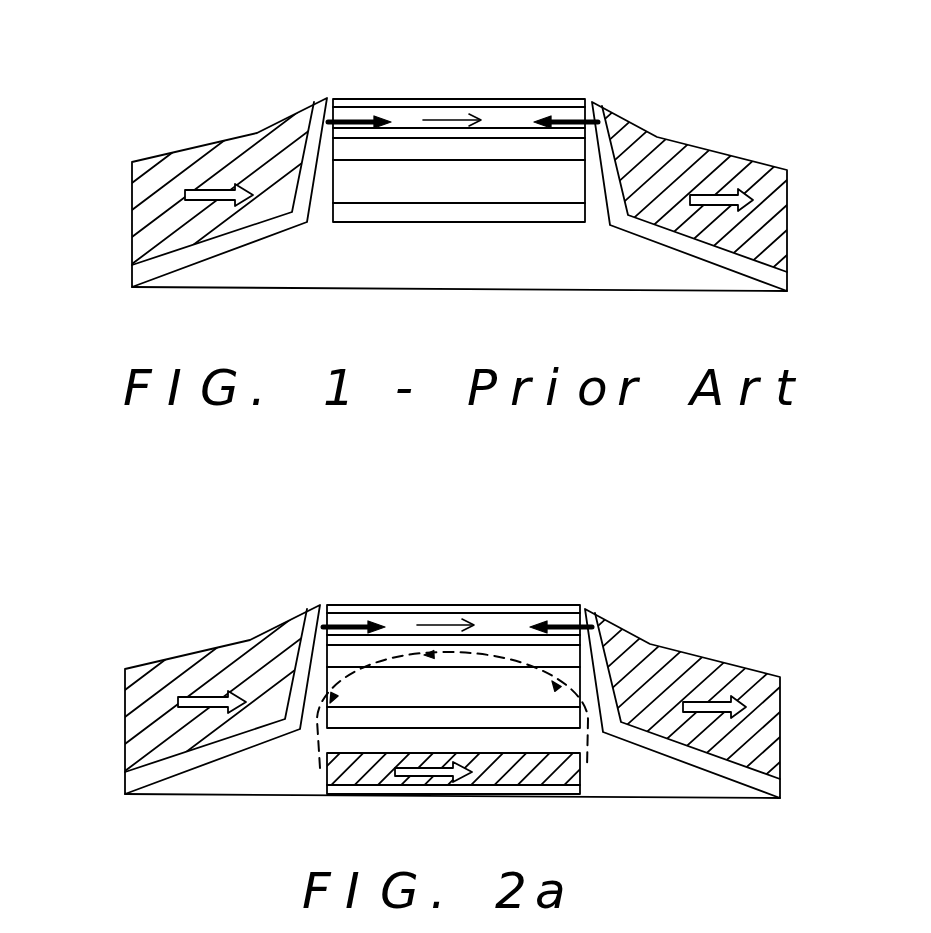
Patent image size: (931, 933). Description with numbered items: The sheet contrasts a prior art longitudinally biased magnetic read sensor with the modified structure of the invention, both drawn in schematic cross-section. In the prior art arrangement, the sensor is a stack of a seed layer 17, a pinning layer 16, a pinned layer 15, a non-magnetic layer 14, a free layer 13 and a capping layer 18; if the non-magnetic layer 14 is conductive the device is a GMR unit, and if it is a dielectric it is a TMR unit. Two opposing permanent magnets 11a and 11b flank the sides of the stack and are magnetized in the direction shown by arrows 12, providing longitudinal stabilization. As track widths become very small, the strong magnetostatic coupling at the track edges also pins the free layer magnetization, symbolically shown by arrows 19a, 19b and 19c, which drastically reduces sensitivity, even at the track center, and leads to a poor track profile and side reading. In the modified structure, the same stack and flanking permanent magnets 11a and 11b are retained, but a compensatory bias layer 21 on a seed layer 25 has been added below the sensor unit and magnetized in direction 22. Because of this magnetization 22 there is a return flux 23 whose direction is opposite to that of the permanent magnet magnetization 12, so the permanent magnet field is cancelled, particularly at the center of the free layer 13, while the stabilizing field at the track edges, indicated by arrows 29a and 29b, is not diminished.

In FIG. 1, the permanent magnet 11a is at (223, 153).
In FIG. 2a, the permanent magnet 11a is at (223, 597).
In FIG. 1, the permanent magnet 11b is at (688, 157).
In FIG. 2a, the permanent magnet 11b is at (680, 685).
In FIG. 1, the magnetization direction arrows 12 is at (185, 195).
In FIG. 2a, the magnetization direction arrows 12 is at (453, 707).
In FIG. 1, the free layer 13 is at (392, 118).
In FIG. 2a, the free layer 13 is at (388, 625).
In FIG. 1, the non-magnetic layer 14 is at (502, 135).
In FIG. 2a, the non-magnetic layer 14 is at (498, 640).
In FIG. 1, the pinned layer 15 is at (385, 152).
In FIG. 2a, the pinned layer 15 is at (390, 652).
In FIG. 1, the pinning layer 16 is at (437, 183).
In FIG. 2a, the pinning layer 16 is at (388, 690).
In FIG. 1, the seed layer 17 is at (498, 212).
In FIG. 2a, the seed layer 17 is at (515, 720).
In FIG. 1, the capping layer 18 is at (543, 105).
In FIG. 2a, the capping layer 18 is at (537, 612).
In FIG. 1, the free layer magnetization arrow 19a is at (350, 118).
In FIG. 1, the free layer magnetization arrow 19b is at (448, 116).
In FIG. 1, the free layer magnetization arrow 19c is at (565, 120).
In FIG. 2a, the compensatory bias layer 21 is at (547, 770).
In FIG. 2a, the magnetization direction 22 is at (443, 775).
In FIG. 2a, the return flux 23 is at (567, 693).
In FIG. 2a, the seed layer 25 is at (568, 792).
In FIG. 2a, the free layer magnetization arrow 29a is at (345, 623).
In FIG. 2a, the free layer magnetization arrow 29b is at (560, 625).